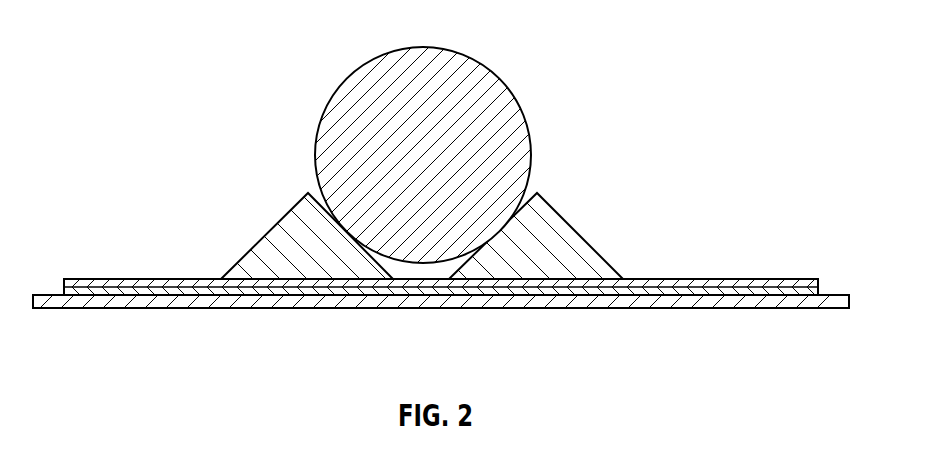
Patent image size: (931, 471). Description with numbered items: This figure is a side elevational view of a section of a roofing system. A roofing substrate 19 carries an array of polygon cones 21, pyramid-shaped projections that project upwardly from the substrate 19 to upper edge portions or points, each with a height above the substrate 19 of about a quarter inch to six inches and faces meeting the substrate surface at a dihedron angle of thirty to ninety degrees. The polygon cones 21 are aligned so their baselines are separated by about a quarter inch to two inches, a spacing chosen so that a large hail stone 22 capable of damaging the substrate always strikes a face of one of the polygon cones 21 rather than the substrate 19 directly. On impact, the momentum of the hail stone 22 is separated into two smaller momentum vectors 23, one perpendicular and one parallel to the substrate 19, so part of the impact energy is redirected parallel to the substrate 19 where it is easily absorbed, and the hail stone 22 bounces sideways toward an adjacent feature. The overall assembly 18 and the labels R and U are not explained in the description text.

The assembly 18 is at (681, 63).
The roofing substrate 19 is at (760, 280).
The polygon cones 21 is at (270, 231).
The hail stone 22 is at (491, 69).
The vectors 23 is at (115, 272).
The element R is at (735, 308).
The element U is at (807, 289).